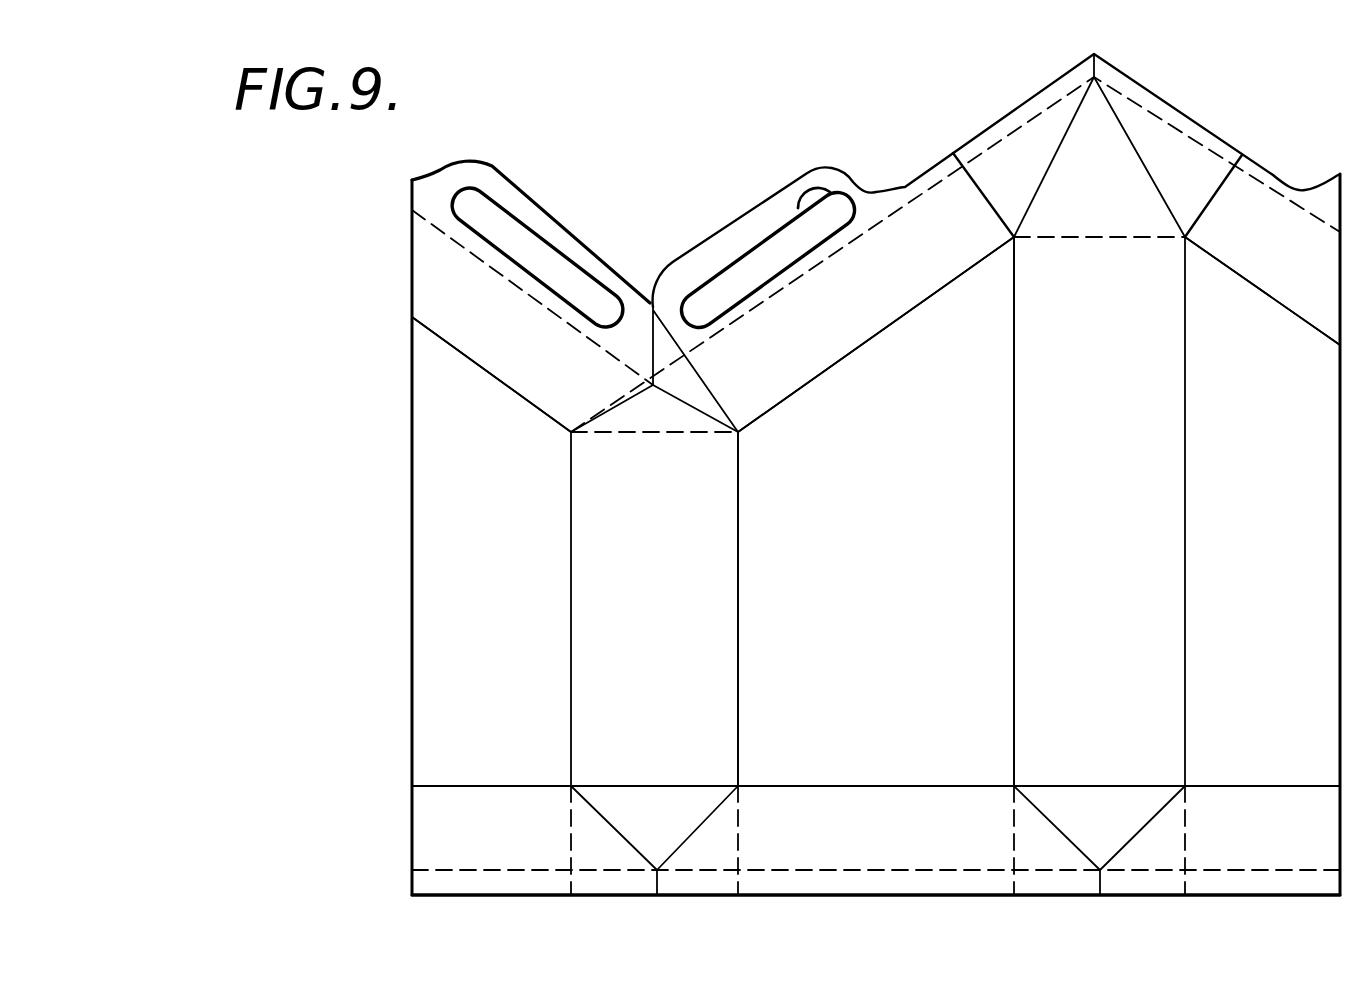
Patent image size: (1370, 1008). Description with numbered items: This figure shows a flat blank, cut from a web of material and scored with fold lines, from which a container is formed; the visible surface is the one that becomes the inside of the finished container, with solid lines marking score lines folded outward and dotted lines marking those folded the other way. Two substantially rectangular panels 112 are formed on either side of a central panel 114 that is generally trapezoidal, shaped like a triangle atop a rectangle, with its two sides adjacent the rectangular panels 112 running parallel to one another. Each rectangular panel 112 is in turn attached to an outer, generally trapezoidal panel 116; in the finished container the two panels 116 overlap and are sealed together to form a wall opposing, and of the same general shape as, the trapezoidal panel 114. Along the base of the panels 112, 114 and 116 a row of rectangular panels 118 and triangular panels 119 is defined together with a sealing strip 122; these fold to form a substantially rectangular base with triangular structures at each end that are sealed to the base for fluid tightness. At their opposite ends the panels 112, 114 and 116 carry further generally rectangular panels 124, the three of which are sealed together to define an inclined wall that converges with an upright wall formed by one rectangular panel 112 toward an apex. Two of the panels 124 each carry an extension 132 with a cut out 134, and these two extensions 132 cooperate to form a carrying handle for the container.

The rectangular panel 112 is at (687, 640).
The trapezoidal panel 114 is at (897, 639).
The outer trapezoidal panel 116 is at (517, 649).
The rectangular base panel 118 is at (910, 852).
The triangular base panel 119 is at (683, 827).
The sealing strip 122 is at (897, 885).
The inclined wall panel 124 is at (540, 350).
The extension 132 is at (835, 112).
The cut out 134 is at (802, 207).